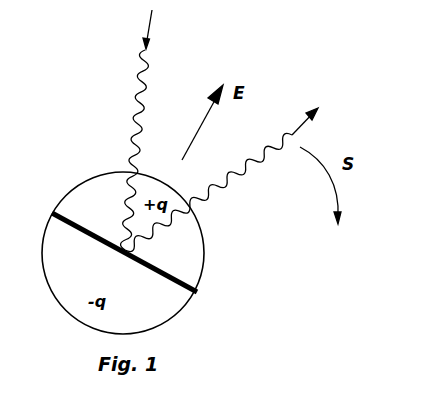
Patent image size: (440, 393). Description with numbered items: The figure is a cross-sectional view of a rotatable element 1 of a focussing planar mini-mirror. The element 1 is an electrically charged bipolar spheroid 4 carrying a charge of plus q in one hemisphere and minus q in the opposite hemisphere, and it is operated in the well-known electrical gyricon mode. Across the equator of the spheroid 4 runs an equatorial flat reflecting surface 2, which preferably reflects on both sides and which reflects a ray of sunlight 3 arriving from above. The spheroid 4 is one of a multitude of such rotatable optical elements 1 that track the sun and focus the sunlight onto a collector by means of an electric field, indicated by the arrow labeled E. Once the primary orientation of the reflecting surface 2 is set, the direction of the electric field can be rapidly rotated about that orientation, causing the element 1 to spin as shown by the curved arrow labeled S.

The rotatable element 1 is at (244, 337).
The equatorial flat reflecting surface 2 is at (84, 238).
The ray of sunlight 3 is at (137, 85).
The electrically charged bipolar spheroid 4 is at (203, 256).